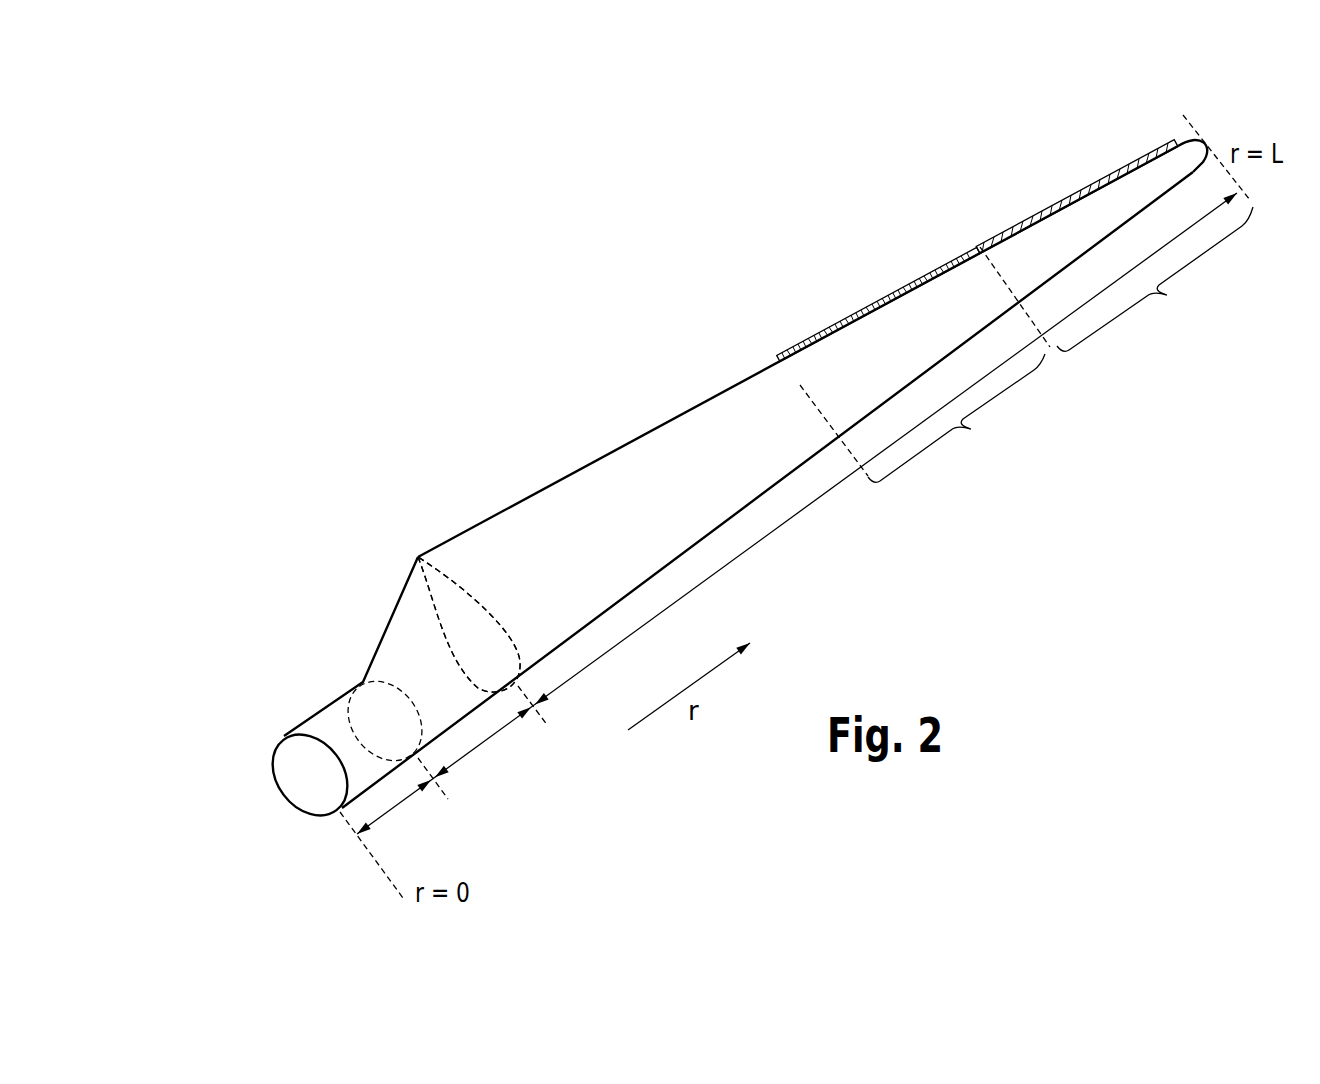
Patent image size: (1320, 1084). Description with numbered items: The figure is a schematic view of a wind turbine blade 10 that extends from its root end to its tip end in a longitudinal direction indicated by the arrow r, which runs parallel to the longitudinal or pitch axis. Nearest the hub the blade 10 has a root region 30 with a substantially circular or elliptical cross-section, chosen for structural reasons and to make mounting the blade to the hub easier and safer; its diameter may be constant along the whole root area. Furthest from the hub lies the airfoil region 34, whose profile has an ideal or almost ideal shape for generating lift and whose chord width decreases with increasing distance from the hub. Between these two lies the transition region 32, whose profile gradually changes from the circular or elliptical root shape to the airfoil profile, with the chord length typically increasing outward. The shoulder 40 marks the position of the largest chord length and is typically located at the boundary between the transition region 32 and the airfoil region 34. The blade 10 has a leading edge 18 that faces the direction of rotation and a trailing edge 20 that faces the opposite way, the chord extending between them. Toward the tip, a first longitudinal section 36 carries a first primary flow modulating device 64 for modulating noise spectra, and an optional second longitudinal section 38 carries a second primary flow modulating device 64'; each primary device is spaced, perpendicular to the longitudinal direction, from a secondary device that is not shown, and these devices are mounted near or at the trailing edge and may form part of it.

The wind turbine blade 10 is at (608, 302).
The leading edge 18 is at (723, 527).
The trailing edge 20 is at (757, 370).
The root region 30 is at (383, 814).
The transition region 32 is at (482, 745).
The airfoil region 34 is at (567, 682).
The first longitudinal section 36 is at (1168, 297).
The second longitudinal section 38 is at (972, 431).
The shoulder 40 is at (437, 612).
The first primary flow modulating device 64 is at (1077, 181).
The second primary flow modulating device 64' is at (878, 284).